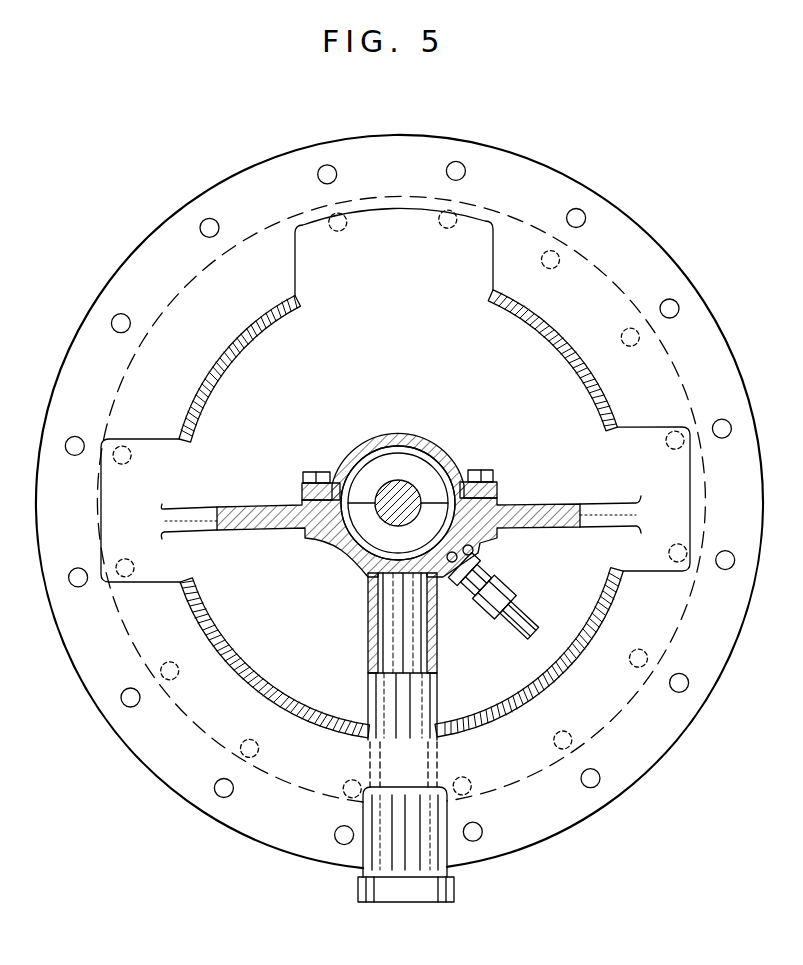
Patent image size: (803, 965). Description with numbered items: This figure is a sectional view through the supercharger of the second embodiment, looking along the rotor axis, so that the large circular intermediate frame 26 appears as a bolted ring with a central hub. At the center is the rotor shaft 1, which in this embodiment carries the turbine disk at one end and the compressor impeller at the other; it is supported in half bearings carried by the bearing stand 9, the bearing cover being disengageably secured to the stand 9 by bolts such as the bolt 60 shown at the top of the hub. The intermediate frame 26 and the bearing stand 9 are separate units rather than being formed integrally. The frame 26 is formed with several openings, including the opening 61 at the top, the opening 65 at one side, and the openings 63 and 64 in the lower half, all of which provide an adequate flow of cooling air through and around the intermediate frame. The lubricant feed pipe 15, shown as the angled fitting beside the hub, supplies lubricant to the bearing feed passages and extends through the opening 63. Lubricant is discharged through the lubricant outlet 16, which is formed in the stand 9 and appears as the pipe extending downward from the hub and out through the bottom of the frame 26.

The rotor shaft 1 is at (416, 467).
The bearing stand 9 is at (318, 530).
The lubricant feed pipe 15 is at (536, 622).
The lubricant outlet 16 is at (402, 893).
The intermediate frame 26 is at (300, 850).
The bolt 60 is at (320, 472).
The opening 61 is at (305, 224).
The opening 63 is at (563, 667).
The opening 64 is at (238, 668).
The opening 65 is at (143, 447).